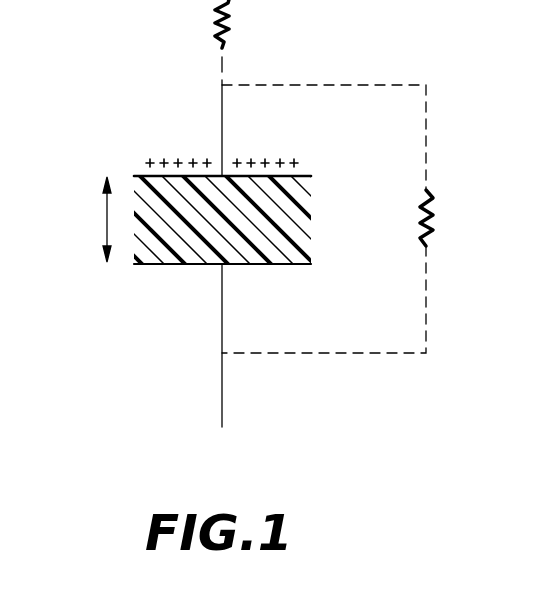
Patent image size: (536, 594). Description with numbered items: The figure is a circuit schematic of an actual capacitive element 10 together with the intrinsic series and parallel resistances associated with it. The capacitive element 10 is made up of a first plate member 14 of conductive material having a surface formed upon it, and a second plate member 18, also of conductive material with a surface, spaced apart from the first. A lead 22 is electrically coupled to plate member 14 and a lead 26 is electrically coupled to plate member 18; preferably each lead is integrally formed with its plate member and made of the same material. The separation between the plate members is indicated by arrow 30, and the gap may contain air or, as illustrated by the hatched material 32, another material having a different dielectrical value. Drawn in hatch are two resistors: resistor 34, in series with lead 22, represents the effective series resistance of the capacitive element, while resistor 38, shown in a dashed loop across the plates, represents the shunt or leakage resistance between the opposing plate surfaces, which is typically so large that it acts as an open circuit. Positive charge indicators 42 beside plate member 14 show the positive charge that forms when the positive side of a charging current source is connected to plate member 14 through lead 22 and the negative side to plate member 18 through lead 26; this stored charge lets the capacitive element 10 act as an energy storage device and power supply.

The capacitive element 10 is at (92, 88).
The first plate member 14 is at (140, 173).
The plate member 18 is at (262, 265).
The lead 22 is at (223, 118).
The lead 26 is at (224, 383).
The arrow 30 is at (105, 206).
The material 32 is at (309, 193).
The resistor 34 is at (232, 15).
The resistor 38 is at (436, 214).
The positive charge indicators 42 is at (295, 158).